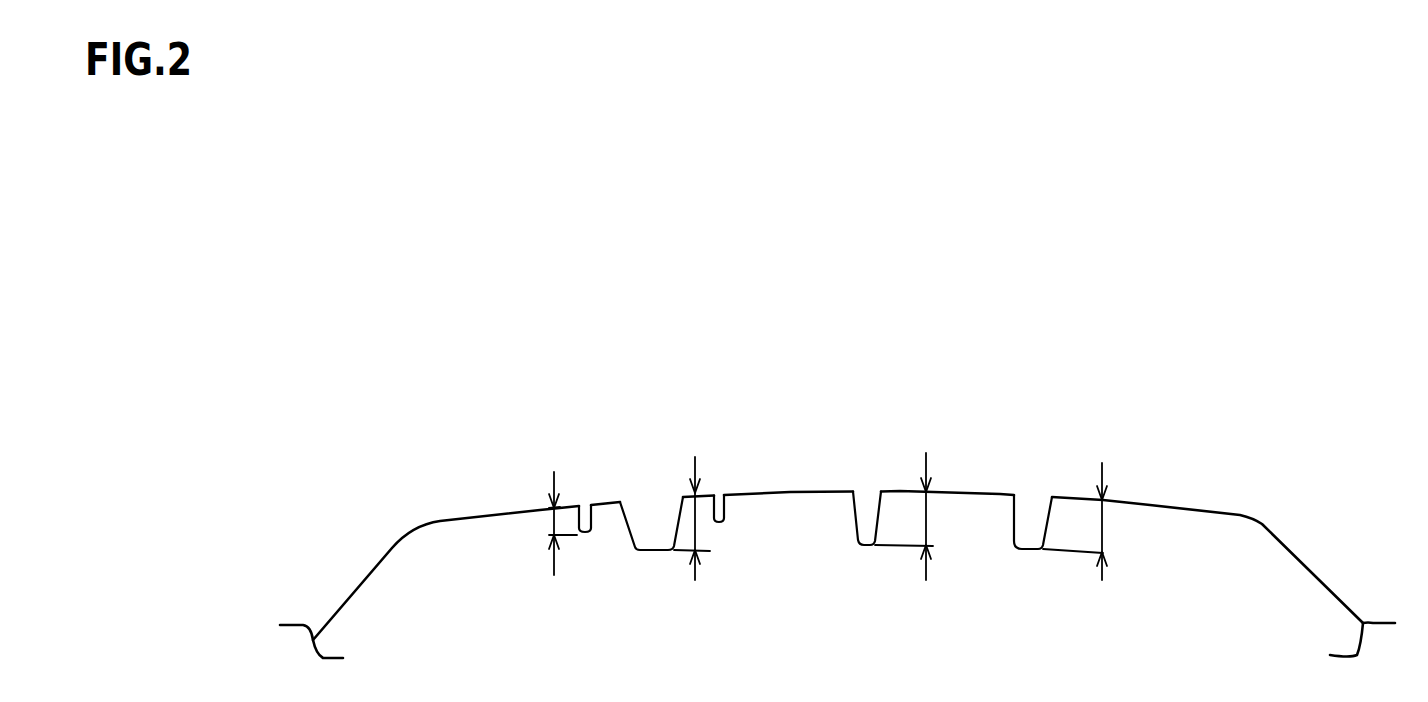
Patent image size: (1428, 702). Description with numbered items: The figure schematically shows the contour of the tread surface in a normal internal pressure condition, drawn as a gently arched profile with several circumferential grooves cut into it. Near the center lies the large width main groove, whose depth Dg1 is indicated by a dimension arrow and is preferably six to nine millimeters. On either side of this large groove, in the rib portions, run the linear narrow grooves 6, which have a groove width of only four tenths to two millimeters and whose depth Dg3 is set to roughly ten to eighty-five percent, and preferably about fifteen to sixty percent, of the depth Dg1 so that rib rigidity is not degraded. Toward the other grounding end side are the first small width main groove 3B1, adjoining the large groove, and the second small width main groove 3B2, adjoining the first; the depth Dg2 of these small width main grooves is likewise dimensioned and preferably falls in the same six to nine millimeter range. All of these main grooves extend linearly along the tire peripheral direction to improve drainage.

The narrow groove 6 is at (655, 515).
The groove depth of the large width main groove Dg1 is at (715, 495).
The groove depth of the small width main grooves Dg2 is at (927, 518).
The groove depth of the narrow grooves Dg3 is at (590, 503).
The first small width main groove 3B1 is at (862, 503).
The second small width main groove 3B2 is at (1025, 517).